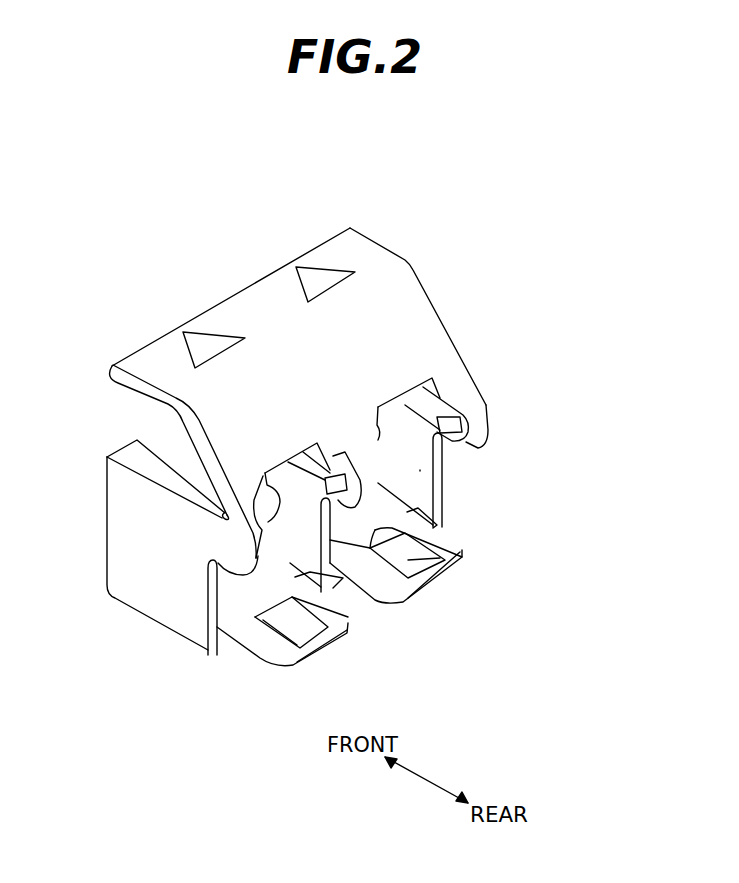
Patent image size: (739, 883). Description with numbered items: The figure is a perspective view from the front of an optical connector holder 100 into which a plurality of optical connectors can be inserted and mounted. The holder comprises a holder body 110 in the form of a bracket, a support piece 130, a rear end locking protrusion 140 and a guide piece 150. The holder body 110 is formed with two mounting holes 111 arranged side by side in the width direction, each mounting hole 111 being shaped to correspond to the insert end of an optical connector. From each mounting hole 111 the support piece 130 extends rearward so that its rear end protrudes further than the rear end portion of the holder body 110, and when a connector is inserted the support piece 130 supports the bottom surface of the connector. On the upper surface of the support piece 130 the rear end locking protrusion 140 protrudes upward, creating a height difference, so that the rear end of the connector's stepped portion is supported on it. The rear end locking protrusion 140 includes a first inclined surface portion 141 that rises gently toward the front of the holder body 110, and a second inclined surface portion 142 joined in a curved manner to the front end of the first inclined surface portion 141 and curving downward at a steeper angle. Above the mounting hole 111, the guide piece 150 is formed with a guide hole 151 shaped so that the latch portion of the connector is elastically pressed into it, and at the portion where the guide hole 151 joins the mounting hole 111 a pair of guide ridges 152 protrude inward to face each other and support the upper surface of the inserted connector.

The optical connector holder 100 is at (422, 241).
The holder body 110 is at (120, 532).
The mounting hole 111 is at (418, 456).
The support piece 130 is at (388, 515).
The rear end locking protrusion 140 is at (547, 520).
The first inclined surface portion 141 is at (407, 560).
The second inclined surface portion 142 is at (440, 538).
The guide piece 150 is at (436, 326).
The guide hole 151 is at (252, 538).
The guide ridge 152 is at (437, 415).